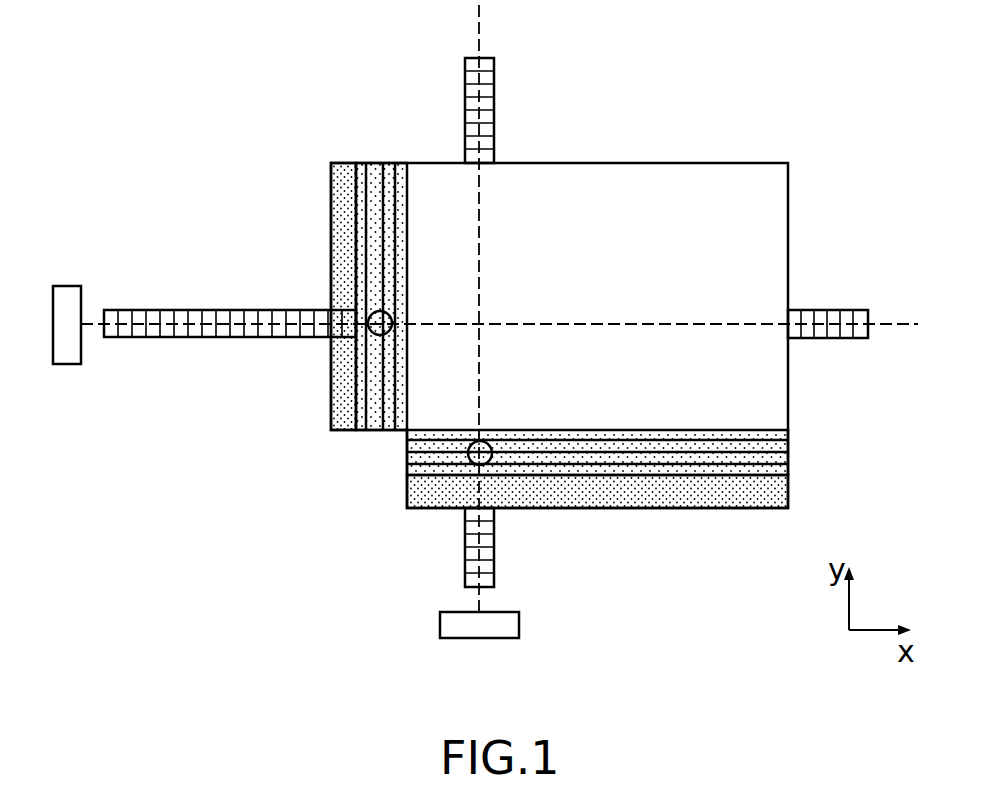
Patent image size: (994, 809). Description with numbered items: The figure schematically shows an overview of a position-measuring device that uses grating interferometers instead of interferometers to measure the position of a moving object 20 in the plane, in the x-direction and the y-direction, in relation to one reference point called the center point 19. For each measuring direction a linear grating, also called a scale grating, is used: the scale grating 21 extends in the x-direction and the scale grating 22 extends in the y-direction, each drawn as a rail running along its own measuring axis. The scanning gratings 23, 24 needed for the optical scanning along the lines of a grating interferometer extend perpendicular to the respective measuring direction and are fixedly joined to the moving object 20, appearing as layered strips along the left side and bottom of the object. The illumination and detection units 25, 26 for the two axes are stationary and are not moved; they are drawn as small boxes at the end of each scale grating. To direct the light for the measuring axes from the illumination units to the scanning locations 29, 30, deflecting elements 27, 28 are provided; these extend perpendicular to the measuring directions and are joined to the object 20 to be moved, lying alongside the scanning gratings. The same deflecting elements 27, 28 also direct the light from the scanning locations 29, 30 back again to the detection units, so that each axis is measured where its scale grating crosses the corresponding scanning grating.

The center point 19 is at (486, 318).
The moving object 20 is at (663, 211).
The scale grating 21 is at (160, 318).
The scale grating 22 is at (485, 549).
The scanning grating 23 is at (373, 154).
The scanning grating 24 is at (798, 445).
The illumination and detection unit 25 is at (67, 285).
The illumination and detection unit 26 is at (505, 625).
The deflecting element 27 is at (326, 184).
The deflecting element 28 is at (727, 506).
The scanning location 29 is at (396, 305).
The scanning location 30 is at (493, 438).